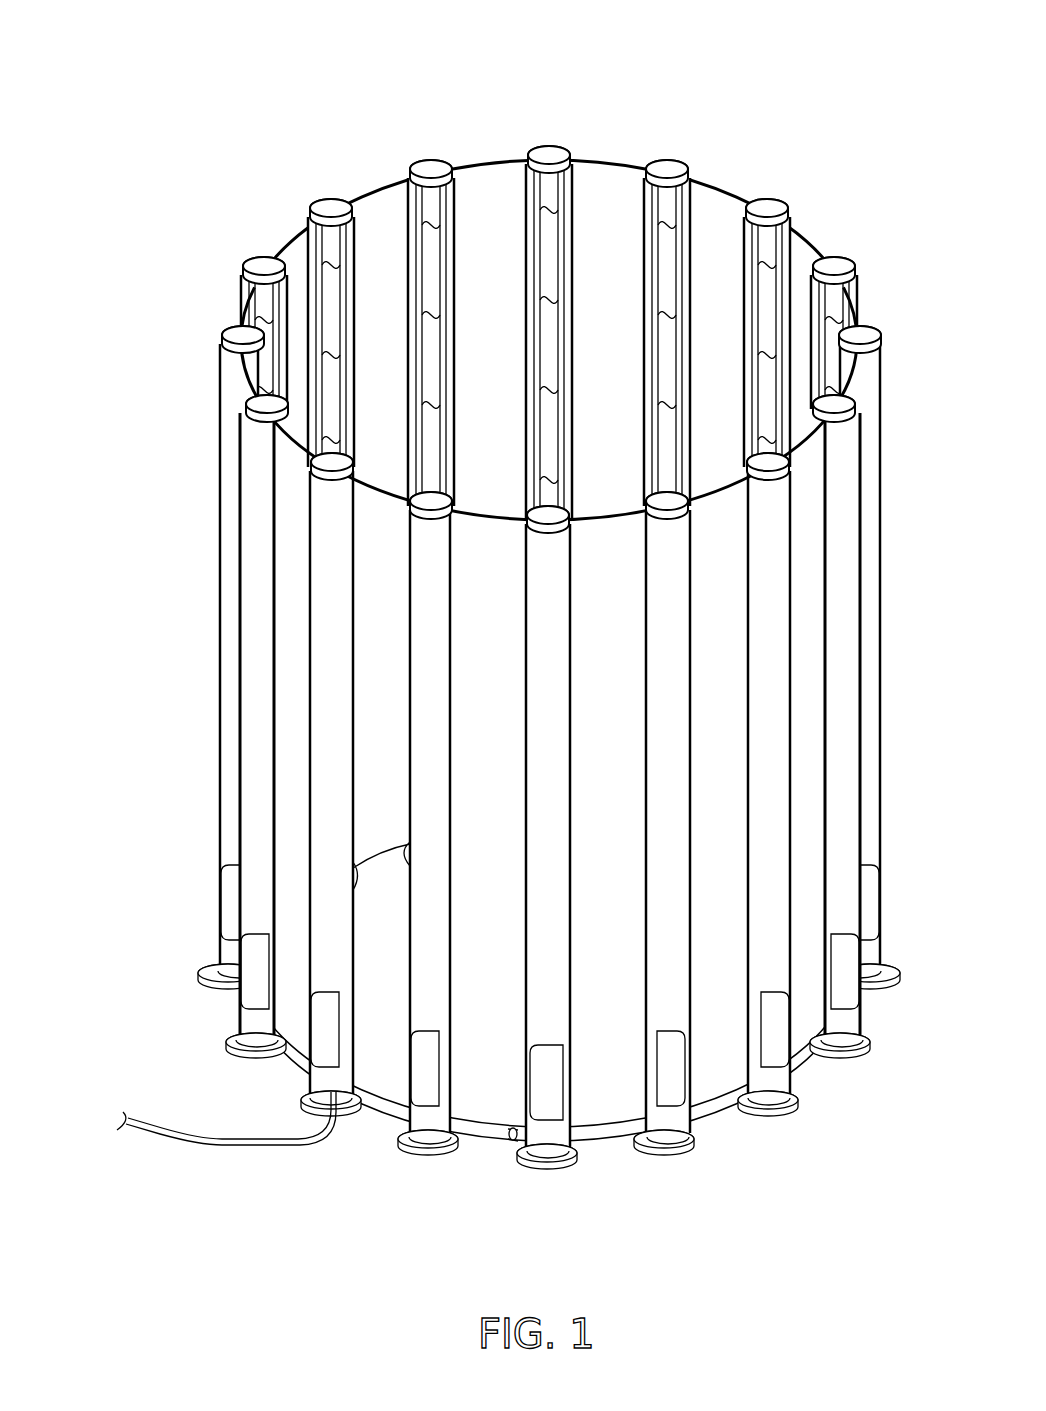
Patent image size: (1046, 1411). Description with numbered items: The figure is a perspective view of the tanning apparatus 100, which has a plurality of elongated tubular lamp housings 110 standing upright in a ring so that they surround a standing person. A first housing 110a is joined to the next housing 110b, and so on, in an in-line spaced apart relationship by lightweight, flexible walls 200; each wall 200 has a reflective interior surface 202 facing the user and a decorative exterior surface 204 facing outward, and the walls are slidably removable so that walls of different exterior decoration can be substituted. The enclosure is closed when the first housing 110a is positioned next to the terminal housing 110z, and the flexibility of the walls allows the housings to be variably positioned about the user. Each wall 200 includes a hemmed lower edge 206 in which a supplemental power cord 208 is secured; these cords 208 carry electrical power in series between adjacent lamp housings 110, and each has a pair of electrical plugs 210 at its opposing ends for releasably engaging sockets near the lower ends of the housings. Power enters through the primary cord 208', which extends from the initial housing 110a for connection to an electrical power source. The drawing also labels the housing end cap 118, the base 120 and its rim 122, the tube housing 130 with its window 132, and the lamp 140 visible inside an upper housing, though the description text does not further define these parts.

The tanning apparatus 100 is at (507, 623).
The elongated tubular lamp housing 110 is at (669, 140).
The first housing 110a is at (345, 944).
The next housing 110b is at (255, 797).
The terminal housing 110z is at (430, 900).
The end cap 118 is at (770, 211).
The base 120 is at (662, 1152).
The base rim 122 is at (697, 1142).
The tube housing 130 is at (582, 844).
The window 132 is at (545, 1073).
The lamp 140 is at (553, 336).
The flexible wall 200 is at (362, 198).
The reflective interior surface 202 is at (516, 311).
The decorative exterior surface 204 is at (700, 875).
The hemmed lower edge 206 is at (472, 1140).
The supplemental power cord 208 is at (496, 1178).
The primary cord 208' is at (226, 1163).
The electrical plug 210 is at (521, 1131).